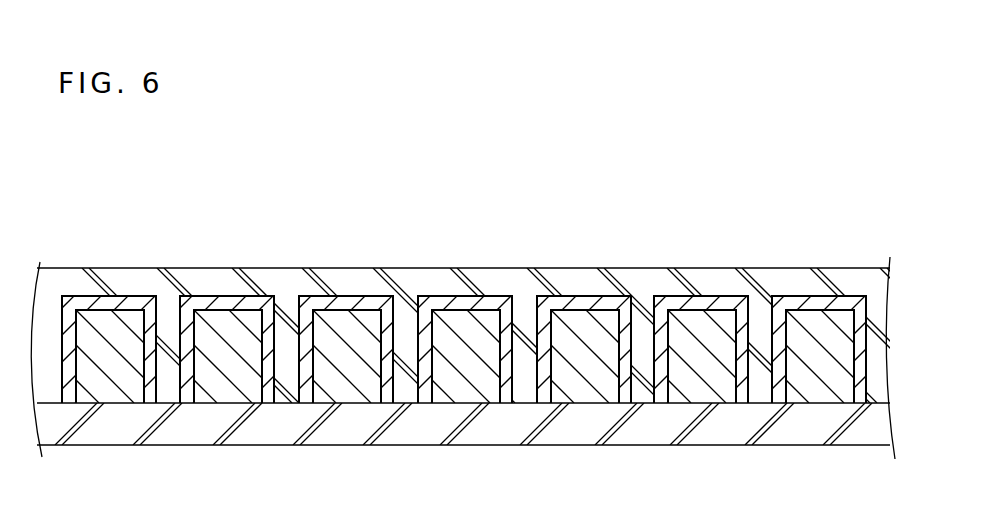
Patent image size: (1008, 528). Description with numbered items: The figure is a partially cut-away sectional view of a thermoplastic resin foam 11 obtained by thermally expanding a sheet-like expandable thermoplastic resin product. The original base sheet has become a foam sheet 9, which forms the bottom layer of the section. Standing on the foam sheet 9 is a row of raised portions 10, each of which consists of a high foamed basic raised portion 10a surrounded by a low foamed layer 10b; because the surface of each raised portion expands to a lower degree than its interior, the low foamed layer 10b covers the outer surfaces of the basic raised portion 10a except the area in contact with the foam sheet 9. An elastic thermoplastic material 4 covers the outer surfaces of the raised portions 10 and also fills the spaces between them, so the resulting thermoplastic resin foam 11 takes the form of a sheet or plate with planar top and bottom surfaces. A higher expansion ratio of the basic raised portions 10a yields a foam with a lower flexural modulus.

The elastic thermoplastic material 4 is at (565, 285).
The foam sheet 9 is at (408, 432).
The raised portions 10 is at (473, 351).
The basic raised portions 10a is at (460, 385).
The low foamed layer 10b is at (483, 300).
The thermoplastic resin foam 11 is at (504, 348).